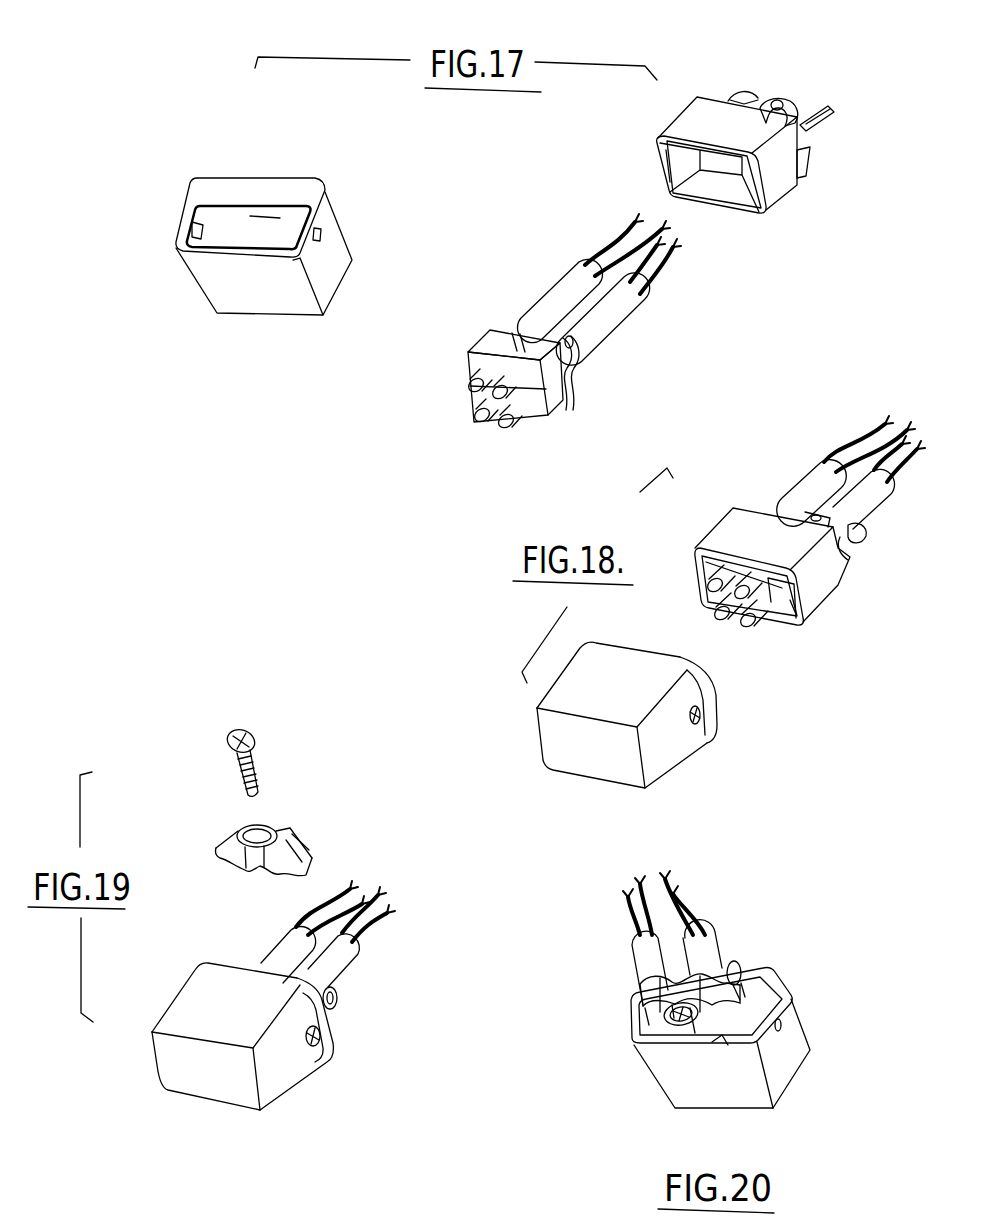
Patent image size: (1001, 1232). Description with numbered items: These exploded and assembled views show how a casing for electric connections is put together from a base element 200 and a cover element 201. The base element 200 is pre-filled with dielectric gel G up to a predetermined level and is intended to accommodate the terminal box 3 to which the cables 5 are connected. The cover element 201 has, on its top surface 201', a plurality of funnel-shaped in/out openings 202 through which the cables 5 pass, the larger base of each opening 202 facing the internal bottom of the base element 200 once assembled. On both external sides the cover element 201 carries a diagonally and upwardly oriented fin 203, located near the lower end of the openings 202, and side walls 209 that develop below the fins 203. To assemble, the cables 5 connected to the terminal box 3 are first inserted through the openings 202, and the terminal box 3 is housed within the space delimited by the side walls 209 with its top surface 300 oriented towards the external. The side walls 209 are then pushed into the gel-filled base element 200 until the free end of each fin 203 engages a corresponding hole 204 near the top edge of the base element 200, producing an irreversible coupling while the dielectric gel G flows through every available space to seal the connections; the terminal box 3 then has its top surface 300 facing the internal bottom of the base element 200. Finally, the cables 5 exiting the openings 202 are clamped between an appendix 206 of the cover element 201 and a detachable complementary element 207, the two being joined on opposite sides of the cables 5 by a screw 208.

In FIG. 17, the terminal box 3 is at (474, 328).
In FIG. 18, the terminal box 3 is at (700, 616).
In FIG. 17, the cables 5 is at (552, 252).
In FIG. 18, the cables 5 is at (806, 435).
In FIG. 19, the cables 5 is at (384, 948).
In FIG. 20, the cables 5 is at (600, 925).
In FIG. 17, the dielectric gel G is at (265, 215).
In FIG. 17, the base element 200 is at (240, 345).
In FIG. 18, the base element 200 is at (508, 742).
In FIG. 19, the base element 200 is at (160, 1082).
In FIG. 20, the base element 200 is at (795, 1090).
In FIG. 17, the cover element 201 is at (727, 210).
In FIG. 18, the cover element 201 is at (762, 519).
In FIG. 20, the top surface 201' is at (745, 973).
In FIG. 17, the funnel-shaped openings 202 is at (734, 94).
In FIG. 20, the funnel-shaped openings 202 is at (722, 1040).
In FIG. 17, the fin 203 is at (800, 158).
In FIG. 19, the fin 203 is at (313, 1048).
In FIG. 18, the hole 204 is at (705, 730).
In FIG. 17, the appendix 206 is at (786, 100).
In FIG. 19, the appendix 206 is at (337, 1005).
In FIG. 20, the appendix 206 is at (735, 961).
In FIG. 19, the complementary element 207 is at (300, 832).
In FIG. 20, the complementary element 207 is at (646, 989).
In FIG. 19, the screw 208 is at (228, 722).
In FIG. 20, the screw 208 is at (668, 1018).
In FIG. 17, the side walls 209 is at (665, 152).
In FIG. 17, the top surface 300 is at (540, 412).
In FIG. 18, the top surface 300 is at (783, 620).